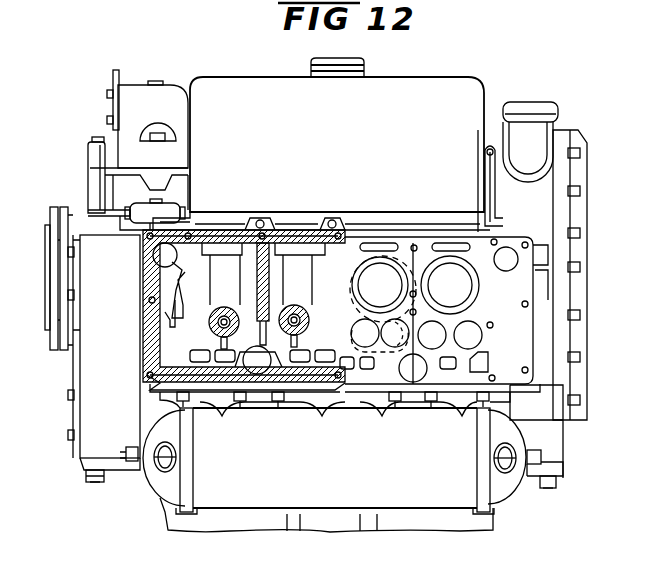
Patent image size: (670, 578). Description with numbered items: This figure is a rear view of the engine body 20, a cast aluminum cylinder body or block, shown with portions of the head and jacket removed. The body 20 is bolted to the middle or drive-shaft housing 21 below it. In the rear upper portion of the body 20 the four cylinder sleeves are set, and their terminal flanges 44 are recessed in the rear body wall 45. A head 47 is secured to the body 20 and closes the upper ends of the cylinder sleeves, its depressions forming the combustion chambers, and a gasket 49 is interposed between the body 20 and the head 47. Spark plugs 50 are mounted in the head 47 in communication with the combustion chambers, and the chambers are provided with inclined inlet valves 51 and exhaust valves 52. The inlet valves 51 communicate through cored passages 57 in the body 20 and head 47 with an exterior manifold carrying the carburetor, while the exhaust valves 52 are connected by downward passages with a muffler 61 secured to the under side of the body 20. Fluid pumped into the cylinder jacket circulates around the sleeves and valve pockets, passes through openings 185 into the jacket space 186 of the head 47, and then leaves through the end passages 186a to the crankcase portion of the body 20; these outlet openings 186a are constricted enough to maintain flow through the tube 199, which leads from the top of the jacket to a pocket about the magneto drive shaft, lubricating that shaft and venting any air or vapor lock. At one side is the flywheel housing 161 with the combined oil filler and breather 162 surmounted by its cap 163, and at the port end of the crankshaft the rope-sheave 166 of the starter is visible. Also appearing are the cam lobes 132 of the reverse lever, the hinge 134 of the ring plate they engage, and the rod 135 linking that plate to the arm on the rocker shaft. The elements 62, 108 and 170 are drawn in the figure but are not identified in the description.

The engine body 20 is at (88, 418).
The middle or drive-shaft housing 21 is at (85, 463).
The terminal flanges 44 is at (468, 266).
The rear body wall 45 is at (490, 300).
The head 47 is at (140, 342).
The gasket 49 is at (413, 245).
The spark plugs 50 is at (222, 332).
The inlet valves 51 is at (392, 320).
The exhaust valves 52 is at (362, 320).
The cored passages 57 is at (402, 372).
The muffler 61 is at (450, 498).
The cylinder liner 62 is at (468, 290).
The mounting bracket 108 is at (172, 92).
The cam lobes 132 is at (92, 190).
The hinge 134 is at (128, 203).
The rod 135 is at (112, 218).
The flywheel housing 161 is at (556, 203).
The combined oil filler and breather 162 is at (540, 133).
The cap 163 is at (535, 108).
The rope-sheave 166 is at (47, 328).
The header tank 170 is at (457, 88).
The openings 185 is at (226, 243).
The jacket space of the cylinder head 186 is at (160, 372).
The end passages 186a is at (158, 260).
The tube 199 is at (492, 197).